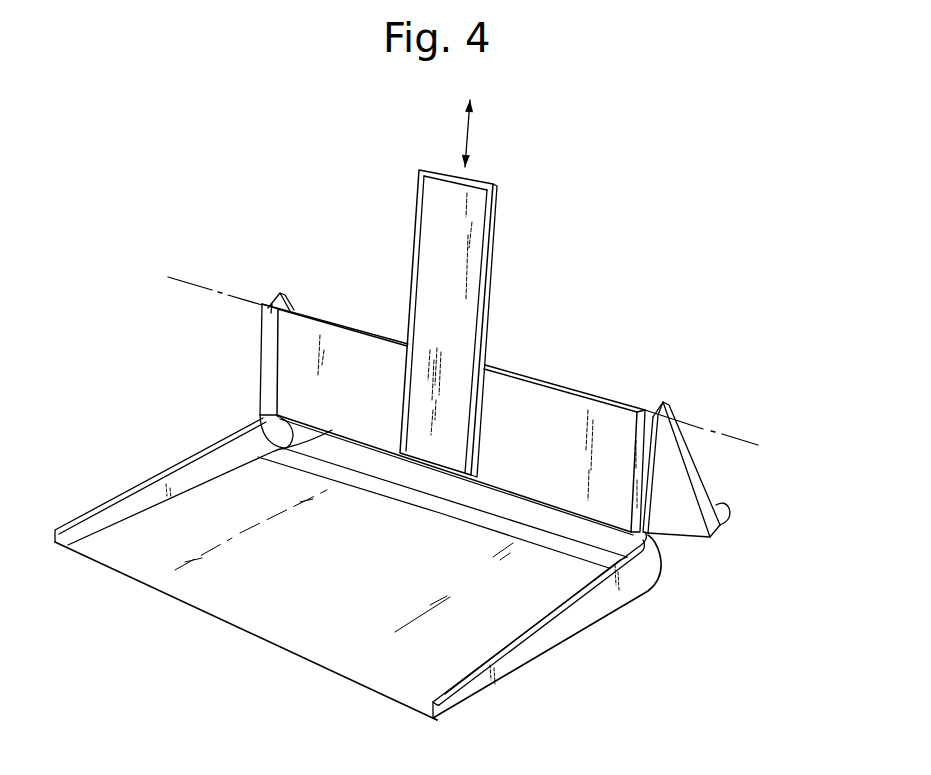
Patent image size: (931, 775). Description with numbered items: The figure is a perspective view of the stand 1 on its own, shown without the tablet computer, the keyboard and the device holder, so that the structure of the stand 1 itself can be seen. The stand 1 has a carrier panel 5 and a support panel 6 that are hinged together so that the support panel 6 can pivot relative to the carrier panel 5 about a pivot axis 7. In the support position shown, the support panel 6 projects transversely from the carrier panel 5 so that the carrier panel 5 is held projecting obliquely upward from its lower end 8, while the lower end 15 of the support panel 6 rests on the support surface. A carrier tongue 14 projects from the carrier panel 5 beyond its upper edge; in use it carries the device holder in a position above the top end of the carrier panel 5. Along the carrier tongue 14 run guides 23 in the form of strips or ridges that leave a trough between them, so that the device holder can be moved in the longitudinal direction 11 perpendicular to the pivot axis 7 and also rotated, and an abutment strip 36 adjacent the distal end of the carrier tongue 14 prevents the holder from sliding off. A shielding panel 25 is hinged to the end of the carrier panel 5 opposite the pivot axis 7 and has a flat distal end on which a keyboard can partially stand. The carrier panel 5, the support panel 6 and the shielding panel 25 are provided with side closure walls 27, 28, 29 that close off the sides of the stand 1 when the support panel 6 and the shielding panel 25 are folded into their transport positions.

The stand 1 is at (692, 376).
The carrier panel 5 is at (659, 514).
The support panel 6 is at (712, 487).
The pivot axis 7 is at (193, 280).
The lower end of the carrier panel 8 is at (273, 440).
The direction of guided movement 11 is at (468, 133).
The carrier tongue 14 is at (493, 298).
The lower end of the support panel 15 is at (713, 533).
The guides 23 is at (417, 218).
The shielding panel 25 is at (520, 677).
The side closure wall of the carrier panel 27 is at (262, 332).
The side closure wall of the support panel 28 is at (292, 308).
The side closure wall of the shielding panel 29 is at (143, 495).
The abutment strip 36 is at (484, 182).